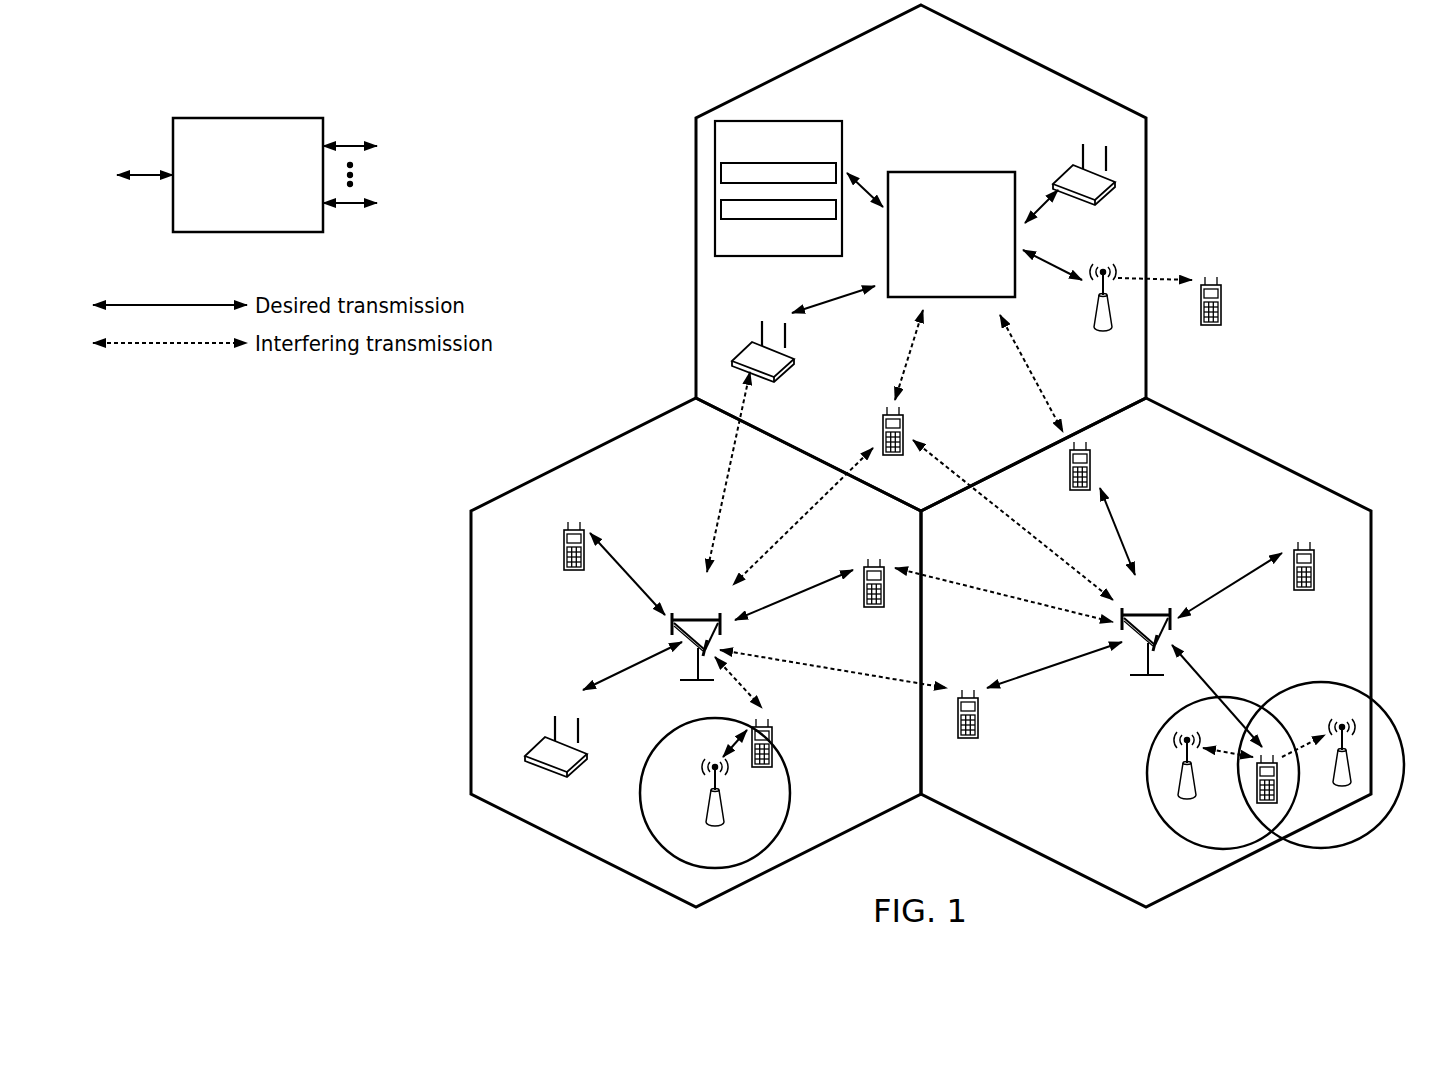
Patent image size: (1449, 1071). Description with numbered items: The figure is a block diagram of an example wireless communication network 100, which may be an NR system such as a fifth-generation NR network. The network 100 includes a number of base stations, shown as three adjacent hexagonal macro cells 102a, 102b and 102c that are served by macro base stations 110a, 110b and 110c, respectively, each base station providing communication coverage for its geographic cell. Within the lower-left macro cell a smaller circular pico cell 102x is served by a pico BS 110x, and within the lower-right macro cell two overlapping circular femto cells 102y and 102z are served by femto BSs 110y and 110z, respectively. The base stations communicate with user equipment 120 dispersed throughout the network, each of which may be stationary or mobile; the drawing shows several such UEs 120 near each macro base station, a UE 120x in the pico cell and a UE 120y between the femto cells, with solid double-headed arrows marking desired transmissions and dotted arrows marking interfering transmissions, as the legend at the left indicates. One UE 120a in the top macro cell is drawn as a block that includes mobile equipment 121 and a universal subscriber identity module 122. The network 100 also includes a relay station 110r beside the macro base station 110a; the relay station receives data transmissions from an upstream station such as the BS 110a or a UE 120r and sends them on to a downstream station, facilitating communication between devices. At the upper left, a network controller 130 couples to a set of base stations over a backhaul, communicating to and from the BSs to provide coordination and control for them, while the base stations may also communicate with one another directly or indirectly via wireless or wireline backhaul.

The wireless communication network 100 is at (1298, 77).
The macro cell 102a is at (1030, 62).
The macro cell 102b is at (584, 456).
The macro cell 102c is at (1279, 455).
The pico cell 102x is at (663, 735).
The femto cell 102y is at (1154, 748).
The femto cell 102z is at (1330, 666).
The macro base station 110a is at (985, 172).
The macro base station 110b is at (705, 603).
The macro base station 110c is at (1140, 617).
The relay station 110r is at (1090, 313).
The pico base station 110x is at (736, 842).
The femto base station 110y is at (1208, 807).
The femto base station 110z is at (1363, 802).
The user equipment 120 is at (748, 325).
The user equipment 120a is at (721, 172).
The user equipment 120r is at (1224, 315).
The user equipment 120x is at (773, 742).
The user equipment 120y is at (1257, 796).
The mobile equipment 121 is at (721, 173).
The universal subscriber identity module 122 is at (721, 210).
The network controller 130 is at (243, 118).